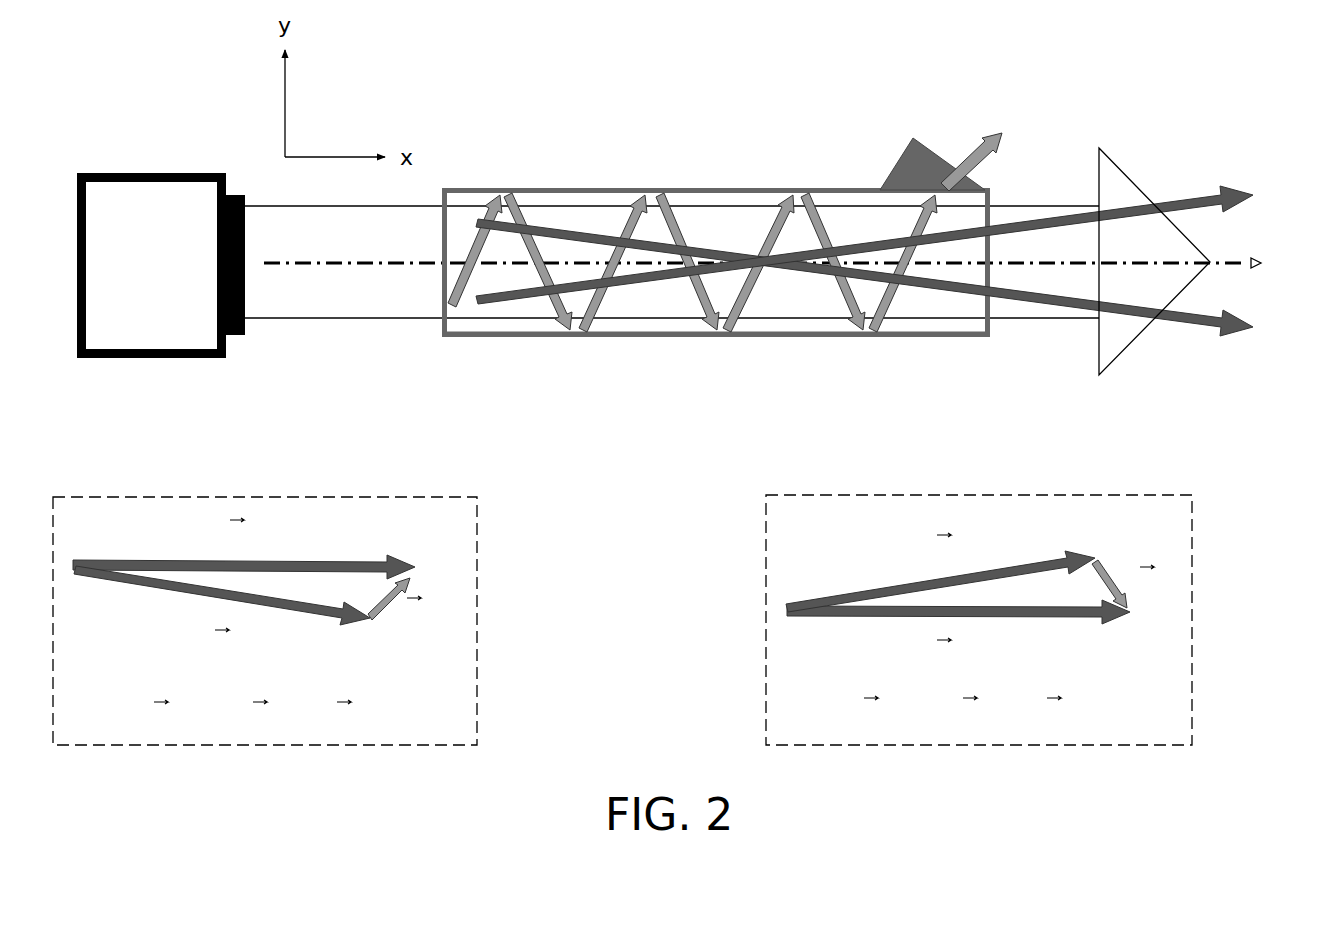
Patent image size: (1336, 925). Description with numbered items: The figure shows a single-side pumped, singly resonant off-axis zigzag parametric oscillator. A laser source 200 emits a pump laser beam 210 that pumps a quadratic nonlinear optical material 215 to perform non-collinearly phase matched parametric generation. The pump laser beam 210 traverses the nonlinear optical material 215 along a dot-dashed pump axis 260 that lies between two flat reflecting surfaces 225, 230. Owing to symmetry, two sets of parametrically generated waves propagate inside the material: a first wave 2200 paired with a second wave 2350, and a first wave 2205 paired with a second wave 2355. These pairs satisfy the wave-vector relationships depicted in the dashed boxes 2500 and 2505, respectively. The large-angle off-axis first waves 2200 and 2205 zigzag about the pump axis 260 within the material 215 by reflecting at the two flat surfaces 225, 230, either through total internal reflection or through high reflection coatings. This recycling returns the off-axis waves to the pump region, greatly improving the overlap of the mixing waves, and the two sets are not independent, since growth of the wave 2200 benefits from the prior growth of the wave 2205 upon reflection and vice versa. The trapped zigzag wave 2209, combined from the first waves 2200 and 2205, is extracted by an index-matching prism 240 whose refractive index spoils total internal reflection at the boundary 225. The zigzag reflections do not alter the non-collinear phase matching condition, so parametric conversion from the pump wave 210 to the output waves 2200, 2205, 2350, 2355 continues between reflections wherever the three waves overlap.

The laser source 200 is at (164, 266).
The pump laser beam 210 is at (311, 326).
The quadratic nonlinear optical material 215 is at (508, 273).
The flat reflecting surface 225 is at (710, 180).
The flat reflecting surface 230 is at (793, 342).
The index-matching prism 240 is at (886, 153).
The pump axis 260 is at (787, 264).
The parametrically generated first wave 2200 is at (621, 225).
The parametrically generated first wave 2205 is at (694, 300).
The zigzag wave 2209 is at (1014, 152).
The parametrically generated second wave 2350 is at (1180, 336).
The parametrically generated second wave 2355 is at (1175, 198).
The dashed box 2500 is at (472, 582).
The dashed box 2505 is at (773, 577).